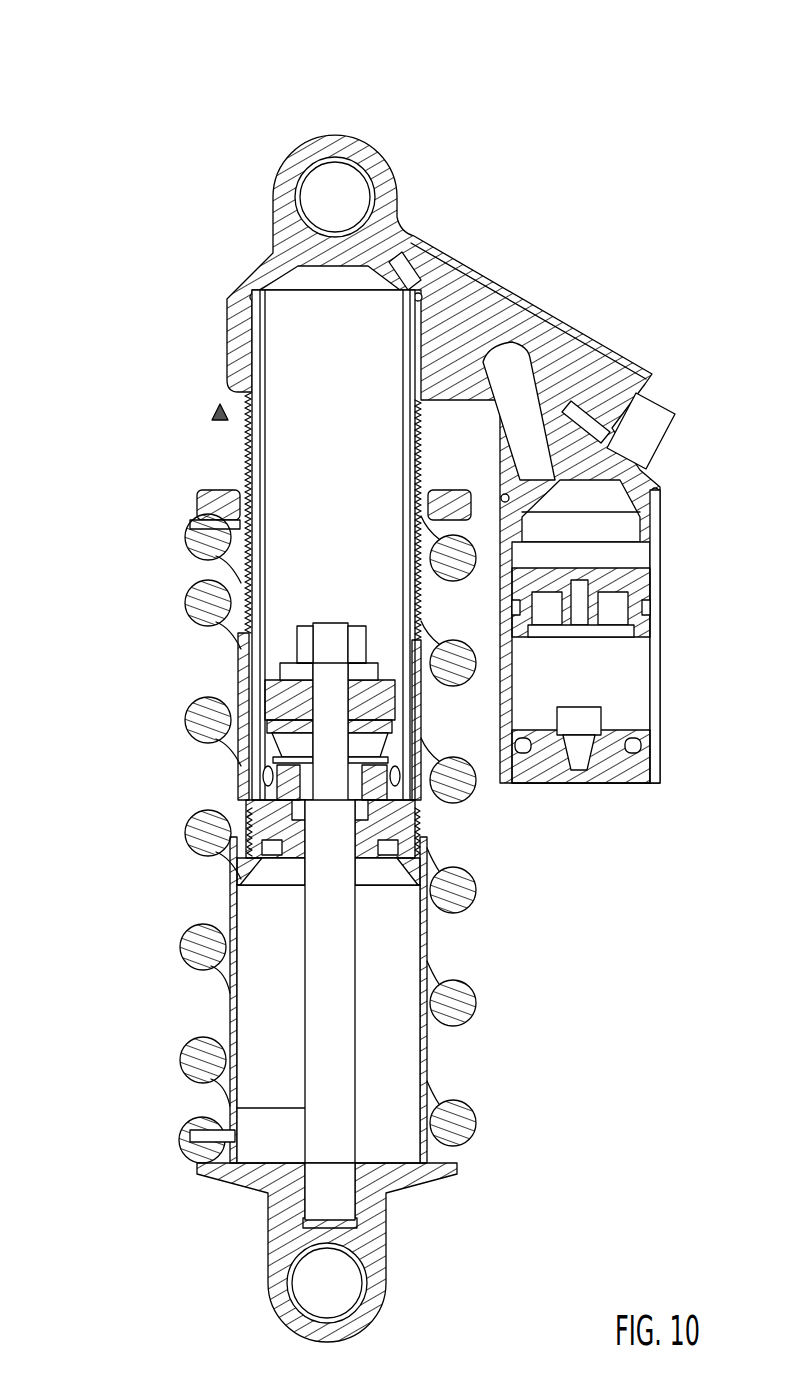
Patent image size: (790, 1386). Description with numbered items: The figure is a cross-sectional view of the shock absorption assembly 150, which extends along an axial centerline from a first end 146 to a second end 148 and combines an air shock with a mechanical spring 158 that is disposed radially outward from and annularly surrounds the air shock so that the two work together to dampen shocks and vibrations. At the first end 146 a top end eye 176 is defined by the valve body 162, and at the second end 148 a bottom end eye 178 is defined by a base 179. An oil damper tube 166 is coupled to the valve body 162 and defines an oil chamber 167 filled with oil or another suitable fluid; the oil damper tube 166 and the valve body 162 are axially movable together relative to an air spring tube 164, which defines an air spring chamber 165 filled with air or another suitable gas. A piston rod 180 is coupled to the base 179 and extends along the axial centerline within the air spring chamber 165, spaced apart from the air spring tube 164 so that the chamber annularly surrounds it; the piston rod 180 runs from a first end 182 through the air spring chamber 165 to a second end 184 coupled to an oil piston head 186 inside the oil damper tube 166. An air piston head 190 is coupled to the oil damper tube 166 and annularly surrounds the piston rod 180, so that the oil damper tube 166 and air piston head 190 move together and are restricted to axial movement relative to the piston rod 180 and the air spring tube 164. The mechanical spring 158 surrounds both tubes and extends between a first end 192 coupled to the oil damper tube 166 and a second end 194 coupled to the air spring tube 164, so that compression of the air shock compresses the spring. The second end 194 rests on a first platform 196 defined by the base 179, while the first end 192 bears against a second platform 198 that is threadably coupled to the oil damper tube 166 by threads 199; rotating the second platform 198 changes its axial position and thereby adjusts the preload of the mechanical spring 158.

The shock absorption assembly 150 is at (572, 80).
The first end 146 is at (408, 142).
The top end eye 176 is at (280, 188).
The valve body 162 is at (492, 318).
The threads 199 is at (216, 408).
The second platform 198 is at (207, 503).
The first end of mechanical spring 192 is at (196, 528).
The oil chamber 167 is at (336, 516).
The oil damper tube 166 is at (243, 672).
The second end of piston rod 184 is at (318, 697).
The oil piston head 186 is at (362, 705).
The mechanical spring 158 is at (190, 718).
The air piston head 190 is at (255, 838).
The air spring tube 164 is at (427, 950).
The air spring chamber 165 is at (288, 1016).
The piston rod 180 is at (300, 1108).
The second end of mechanical spring 194 is at (195, 1142).
The base 179 is at (172, 1202).
The first platform 196 is at (218, 1183).
The first end of piston rod 182 is at (356, 1202).
The bottom end eye 178 is at (368, 1285).
The second end 148 is at (258, 1340).